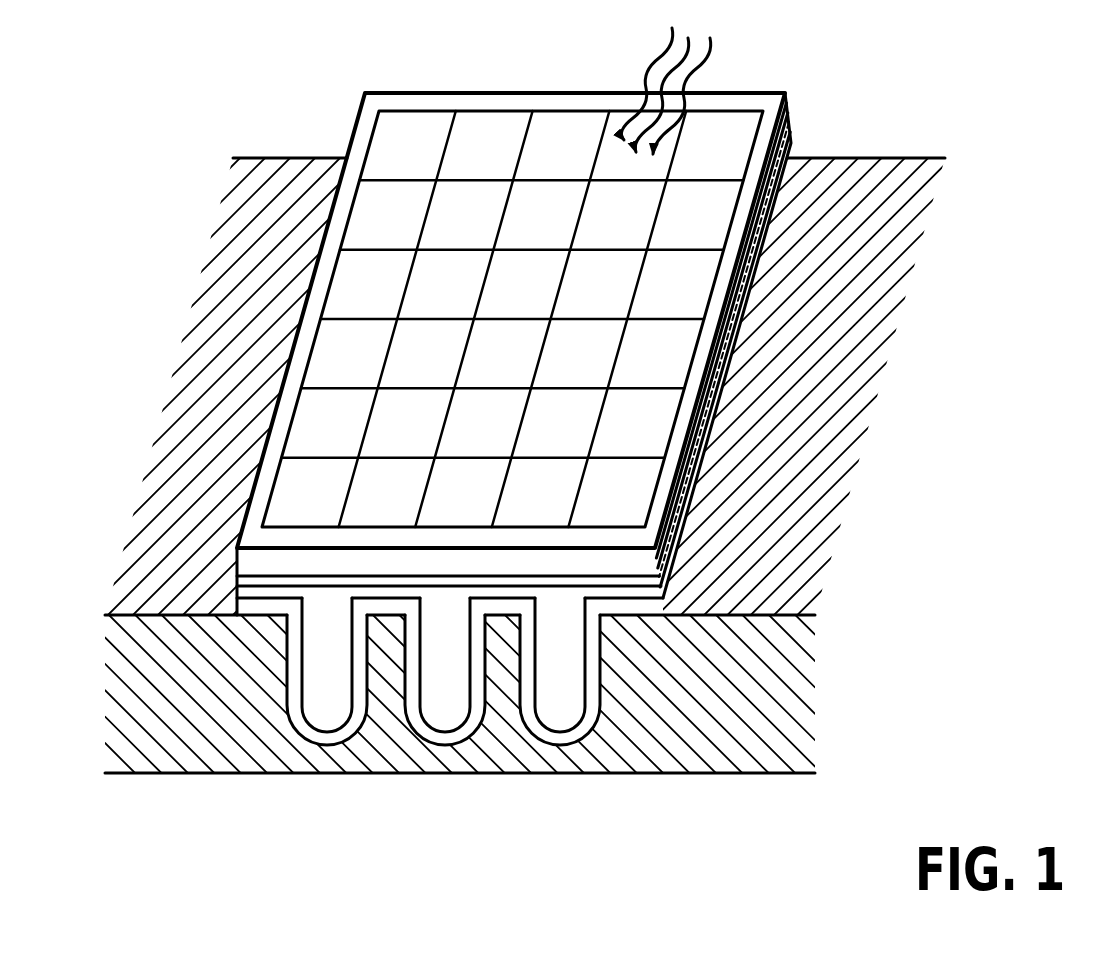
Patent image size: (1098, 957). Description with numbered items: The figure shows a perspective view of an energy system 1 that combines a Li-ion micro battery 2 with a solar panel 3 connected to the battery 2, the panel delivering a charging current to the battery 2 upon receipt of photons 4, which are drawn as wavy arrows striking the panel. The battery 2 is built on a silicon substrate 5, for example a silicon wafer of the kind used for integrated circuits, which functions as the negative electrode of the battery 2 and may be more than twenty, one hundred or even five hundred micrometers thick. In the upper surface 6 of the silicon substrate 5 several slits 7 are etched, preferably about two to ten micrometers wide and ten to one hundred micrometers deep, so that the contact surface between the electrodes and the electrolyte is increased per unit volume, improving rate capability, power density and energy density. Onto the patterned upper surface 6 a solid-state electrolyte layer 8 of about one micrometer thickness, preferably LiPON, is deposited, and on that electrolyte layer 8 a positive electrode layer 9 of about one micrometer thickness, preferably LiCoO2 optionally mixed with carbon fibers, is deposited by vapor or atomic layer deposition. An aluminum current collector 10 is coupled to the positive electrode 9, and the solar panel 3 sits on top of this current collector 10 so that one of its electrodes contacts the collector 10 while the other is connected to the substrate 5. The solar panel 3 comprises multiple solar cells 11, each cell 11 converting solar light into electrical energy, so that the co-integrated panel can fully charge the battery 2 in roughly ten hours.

The energy system 1 is at (481, 421).
The Li-ion micro battery 2 is at (934, 577).
The solar panel 3 is at (762, 105).
The photons 4 is at (655, 40).
The silicon substrate 5 is at (195, 758).
The upper surface 6 is at (855, 412).
The slits 7 is at (327, 714).
The solid-state electrolyte layer 8 is at (246, 613).
The positive electrode layer 9 is at (238, 592).
The aluminum current collector 10 is at (238, 571).
The solar cells 11 is at (513, 319).